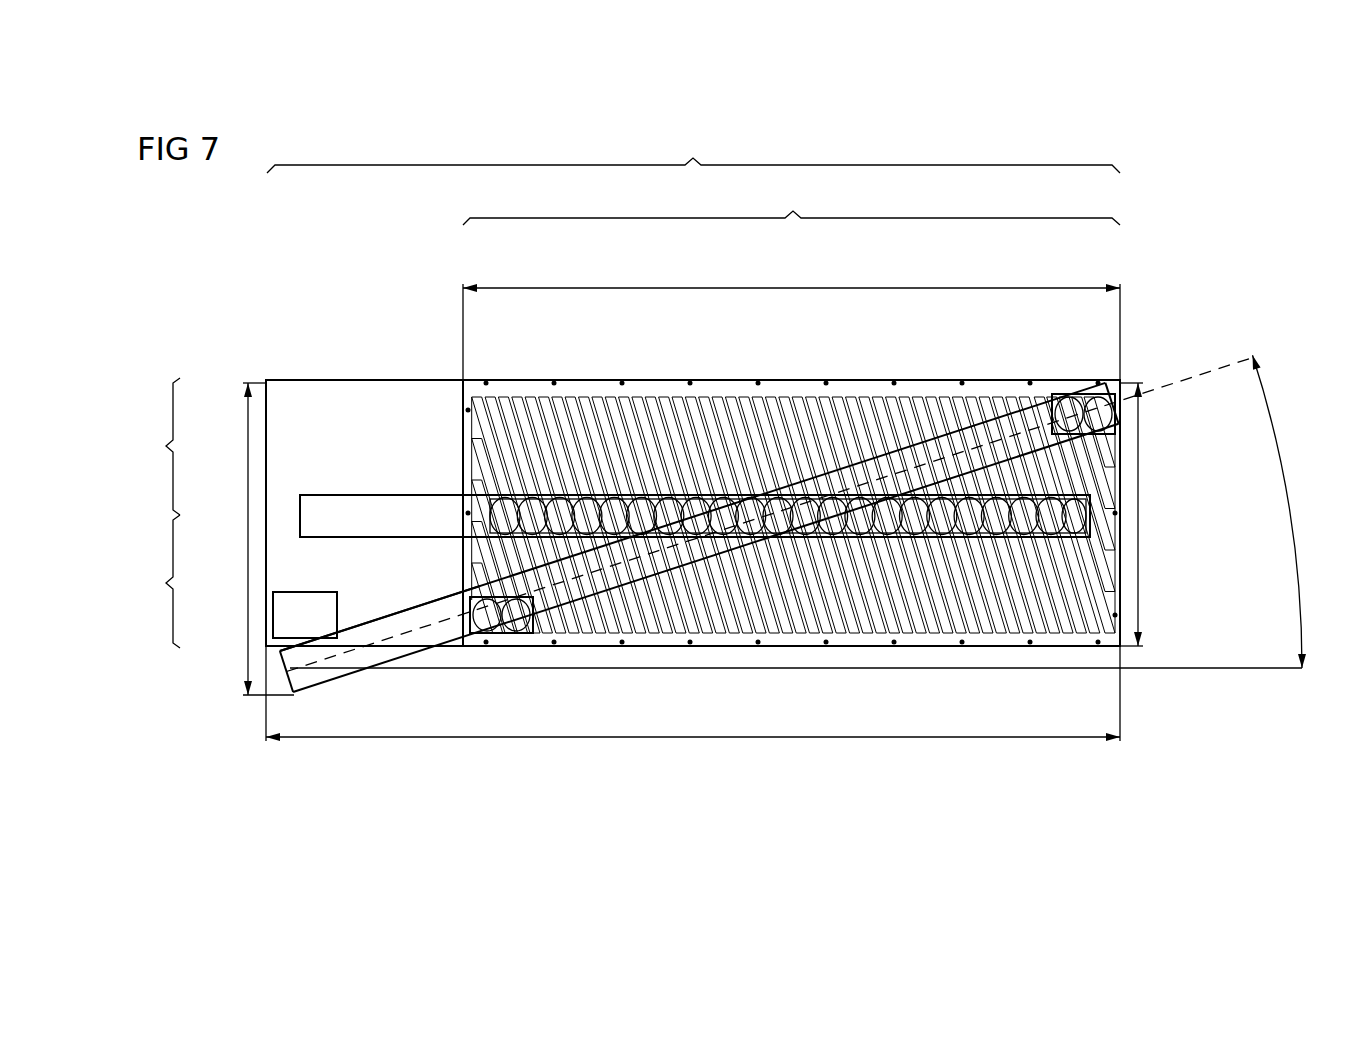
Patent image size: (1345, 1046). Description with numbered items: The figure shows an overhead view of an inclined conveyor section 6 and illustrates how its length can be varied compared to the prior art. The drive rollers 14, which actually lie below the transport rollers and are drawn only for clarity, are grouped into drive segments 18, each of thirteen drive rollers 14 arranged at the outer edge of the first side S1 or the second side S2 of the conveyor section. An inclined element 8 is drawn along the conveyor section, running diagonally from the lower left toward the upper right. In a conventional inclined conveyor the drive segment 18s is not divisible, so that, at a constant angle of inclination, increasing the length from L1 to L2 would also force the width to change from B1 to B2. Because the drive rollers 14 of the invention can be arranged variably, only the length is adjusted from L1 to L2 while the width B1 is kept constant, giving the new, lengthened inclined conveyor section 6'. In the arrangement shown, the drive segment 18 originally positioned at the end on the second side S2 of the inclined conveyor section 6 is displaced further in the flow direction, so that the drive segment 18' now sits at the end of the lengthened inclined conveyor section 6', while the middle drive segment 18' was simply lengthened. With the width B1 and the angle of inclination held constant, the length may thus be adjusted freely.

The inclined conveyor section 6 is at (791, 204).
The lengthened inclined conveyor section 6' is at (693, 151).
The center tube / support bar 8 is at (910, 473).
The drive roller 14 is at (483, 622).
The drive segment 18 is at (793, 523).
The displaced drive segment 18' is at (681, 533).
The drive segment of the prior art 18s is at (373, 620).
The original length L1 is at (793, 286).
The increased length L2 is at (692, 740).
The constant width B1 is at (1142, 512).
The adjusted width B2 is at (246, 538).
The first side S1 is at (157, 446).
The second side S2 is at (157, 581).